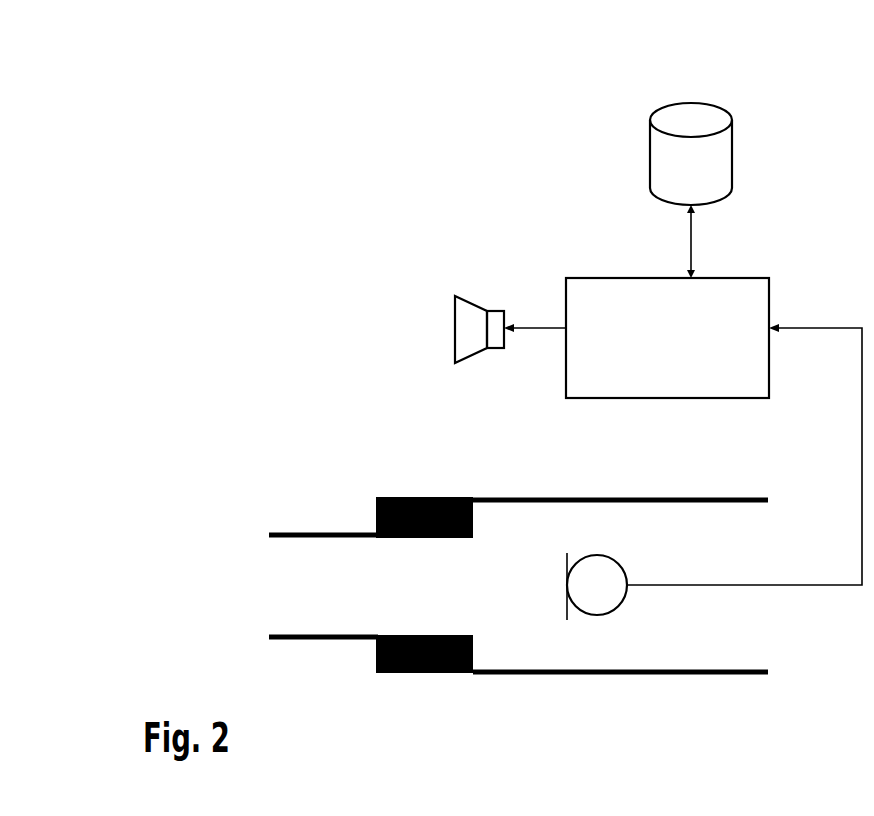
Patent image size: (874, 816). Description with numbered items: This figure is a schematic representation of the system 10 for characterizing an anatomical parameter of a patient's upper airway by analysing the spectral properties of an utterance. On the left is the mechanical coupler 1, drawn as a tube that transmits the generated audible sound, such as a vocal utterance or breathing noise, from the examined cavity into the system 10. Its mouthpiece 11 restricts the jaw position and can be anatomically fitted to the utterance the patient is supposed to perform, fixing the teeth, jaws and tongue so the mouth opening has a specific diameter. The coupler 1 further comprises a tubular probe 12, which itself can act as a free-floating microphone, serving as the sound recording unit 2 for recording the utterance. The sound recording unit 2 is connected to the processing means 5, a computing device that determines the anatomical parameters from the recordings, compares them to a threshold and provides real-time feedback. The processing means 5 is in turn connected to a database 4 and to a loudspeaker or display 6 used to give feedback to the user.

The system 10 is at (266, 264).
The mechanical coupler 1 is at (331, 502).
The mouthpiece 11 is at (275, 583).
The probe 12 is at (483, 500).
The sound recording unit 2 is at (595, 582).
The processing means 5 is at (619, 305).
The database 4 is at (677, 170).
The loudspeaker or display 6 is at (480, 330).